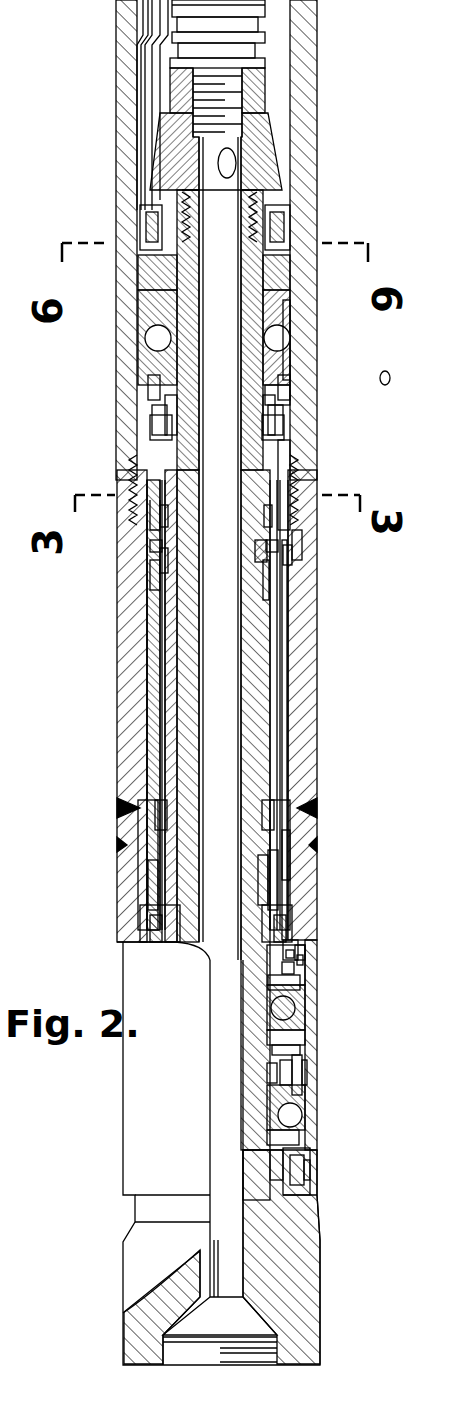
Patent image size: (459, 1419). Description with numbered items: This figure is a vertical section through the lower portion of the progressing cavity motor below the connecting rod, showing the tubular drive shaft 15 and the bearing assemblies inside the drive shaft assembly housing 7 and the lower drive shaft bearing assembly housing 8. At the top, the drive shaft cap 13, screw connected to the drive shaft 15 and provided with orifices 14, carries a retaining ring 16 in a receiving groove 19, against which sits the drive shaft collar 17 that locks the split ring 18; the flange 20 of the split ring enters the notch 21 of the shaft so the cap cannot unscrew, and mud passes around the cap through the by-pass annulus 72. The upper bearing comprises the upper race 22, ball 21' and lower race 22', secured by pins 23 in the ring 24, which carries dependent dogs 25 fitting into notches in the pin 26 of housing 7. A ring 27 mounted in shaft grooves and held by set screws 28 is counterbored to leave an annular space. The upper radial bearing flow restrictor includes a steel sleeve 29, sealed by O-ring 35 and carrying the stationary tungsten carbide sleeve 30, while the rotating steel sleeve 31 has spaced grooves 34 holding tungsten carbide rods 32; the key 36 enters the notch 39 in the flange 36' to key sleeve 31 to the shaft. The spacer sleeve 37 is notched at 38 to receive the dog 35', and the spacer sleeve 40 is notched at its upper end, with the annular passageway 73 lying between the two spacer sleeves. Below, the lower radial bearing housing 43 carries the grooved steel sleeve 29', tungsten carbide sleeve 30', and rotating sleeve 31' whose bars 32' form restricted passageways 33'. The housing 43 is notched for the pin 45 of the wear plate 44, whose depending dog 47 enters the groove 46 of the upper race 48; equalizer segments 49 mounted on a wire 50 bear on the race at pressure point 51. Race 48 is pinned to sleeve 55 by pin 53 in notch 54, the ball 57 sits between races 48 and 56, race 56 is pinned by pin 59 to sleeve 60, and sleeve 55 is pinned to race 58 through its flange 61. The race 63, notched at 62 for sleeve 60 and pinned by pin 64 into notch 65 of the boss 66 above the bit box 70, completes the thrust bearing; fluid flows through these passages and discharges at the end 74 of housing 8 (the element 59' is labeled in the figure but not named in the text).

The drive shaft assembly housing 7 is at (327, 710).
The lower drive shaft bearing assembly housing 8 is at (329, 1172).
The drive shaft cap 13 is at (268, 135).
The orifices 14 is at (335, 174).
The tubular drive shaft 15 is at (252, 622).
The retaining ring 16 is at (150, 210).
The drive shaft collar 17 is at (283, 225).
The split ring 18 is at (287, 240).
The receiving groove 19 is at (258, 212).
The flange of the split ring 20 is at (160, 290).
The notch of the drive shaft 21 is at (314, 331).
The ball 21' is at (117, 352).
The upper race 22 is at (243, 320).
The lower race 22' is at (347, 340).
The pins 23 is at (103, 410).
The ring 24 is at (286, 395).
The dependent dogs 25 is at (361, 438).
The pin of the housing 26 is at (296, 462).
The ring 27 is at (198, 432).
The set screws 28 is at (222, 470).
The steel sleeve 29 is at (101, 489).
The steel circularly grooved sleeve 29' is at (329, 876).
The tungsten carbide sleeve 30 is at (343, 485).
The tungsten carbide sleeve 30' is at (336, 880).
The steel sleeve 31 is at (216, 521).
The steel sleeve 31' is at (210, 883).
The tungsten carbide rods 32 is at (111, 566).
The bars 32' is at (169, 695).
The restricted passageways 33' is at (337, 851).
The spaced grooves 34 is at (162, 546).
The O-ring 35 is at (344, 553).
The dog 35' is at (341, 576).
The key 36 is at (234, 565).
The flange of the sleeve 36' is at (114, 617).
The spacer sleeve 37 is at (279, 660).
The notch 38 is at (93, 640).
The notch 39 is at (266, 590).
The spacer sleeve 40 is at (252, 692).
The lower radial bearing housing 43 is at (300, 826).
The wear plate 44 is at (300, 948).
The pin 45 is at (303, 930).
The groove 46 is at (270, 975).
The depending dog 47 is at (270, 950).
The upper race 48 is at (272, 1000).
The equalizer segment 49 is at (294, 970).
The wire 50 is at (296, 955).
The pressure point 51 is at (303, 960).
The pin 53 is at (300, 985).
The notch 54 is at (295, 1008).
The sleeve 55 is at (303, 1035).
The race 56 is at (300, 1048).
The ball 57 is at (336, 1110).
The race 58 is at (302, 1118).
The pin 59 is at (341, 1061).
The race 59' is at (361, 1085).
The sleeve 60 is at (267, 1095).
The flange 61 is at (267, 1068).
The notch 62 is at (270, 1140).
The race 63 is at (311, 1150).
The pin 64 is at (307, 1185).
The notch 65 is at (290, 1172).
The boss 66 is at (272, 1165).
The bit box 70 is at (302, 1280).
The by-pass annulus 72 is at (292, 150).
The annular passageway 73 is at (286, 678).
The end of the housing 74 is at (312, 1198).